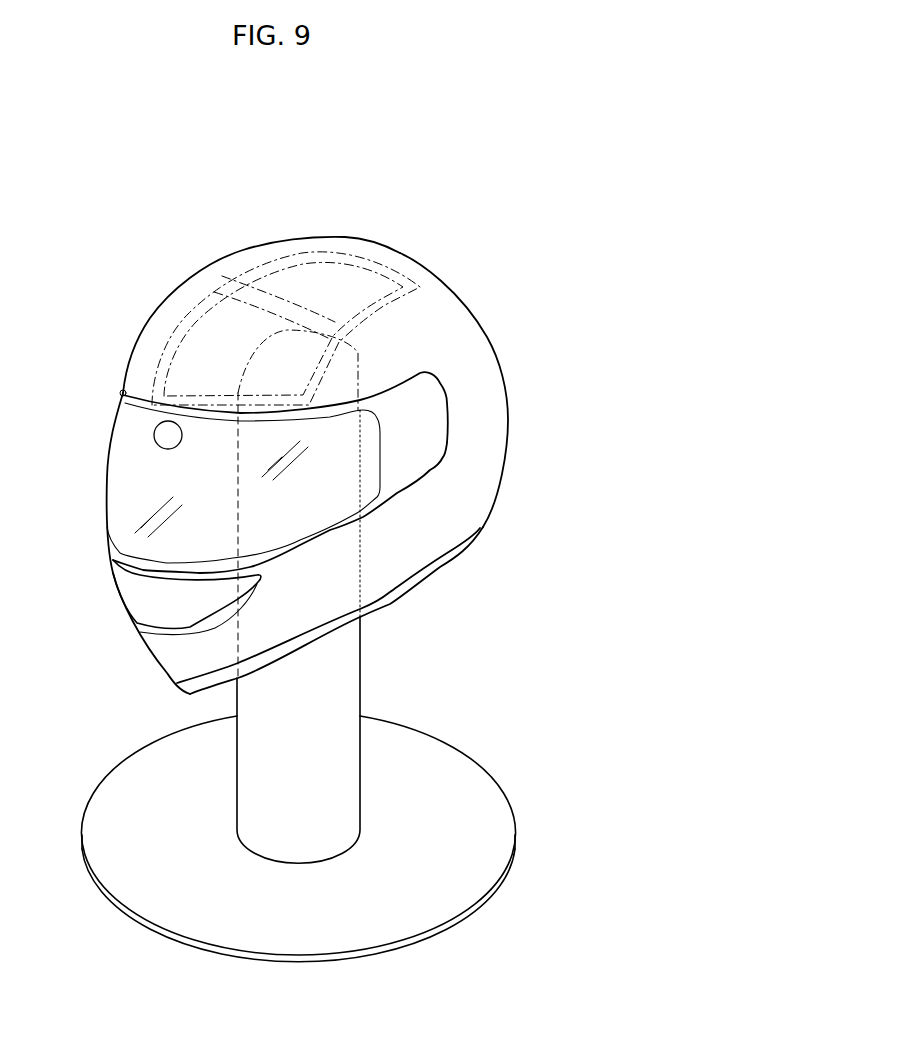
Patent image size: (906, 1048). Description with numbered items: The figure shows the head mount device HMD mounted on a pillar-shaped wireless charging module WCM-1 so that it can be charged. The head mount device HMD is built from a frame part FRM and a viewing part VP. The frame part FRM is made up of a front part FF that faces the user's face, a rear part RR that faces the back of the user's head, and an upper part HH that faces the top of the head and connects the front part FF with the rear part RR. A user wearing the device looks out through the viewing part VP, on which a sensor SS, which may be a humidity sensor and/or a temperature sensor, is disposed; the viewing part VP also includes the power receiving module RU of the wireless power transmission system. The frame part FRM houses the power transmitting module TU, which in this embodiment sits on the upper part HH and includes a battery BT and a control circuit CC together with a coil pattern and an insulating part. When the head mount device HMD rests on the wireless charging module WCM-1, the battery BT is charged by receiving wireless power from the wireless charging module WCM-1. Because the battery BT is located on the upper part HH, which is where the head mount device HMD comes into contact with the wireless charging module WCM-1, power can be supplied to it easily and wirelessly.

The head mount device HMD is at (528, 175).
The upper part HH is at (432, 318).
The rear part RR is at (484, 345).
The frame part FRM is at (483, 412).
The power transmitting module TU is at (258, 257).
The control circuit CC is at (193, 327).
The battery BT is at (362, 257).
The power receiving module RU is at (120, 518).
The viewing part VP is at (134, 473).
The sensor SS is at (154, 433).
The front part FF is at (110, 563).
The wireless charging module WCM-1 is at (350, 672).